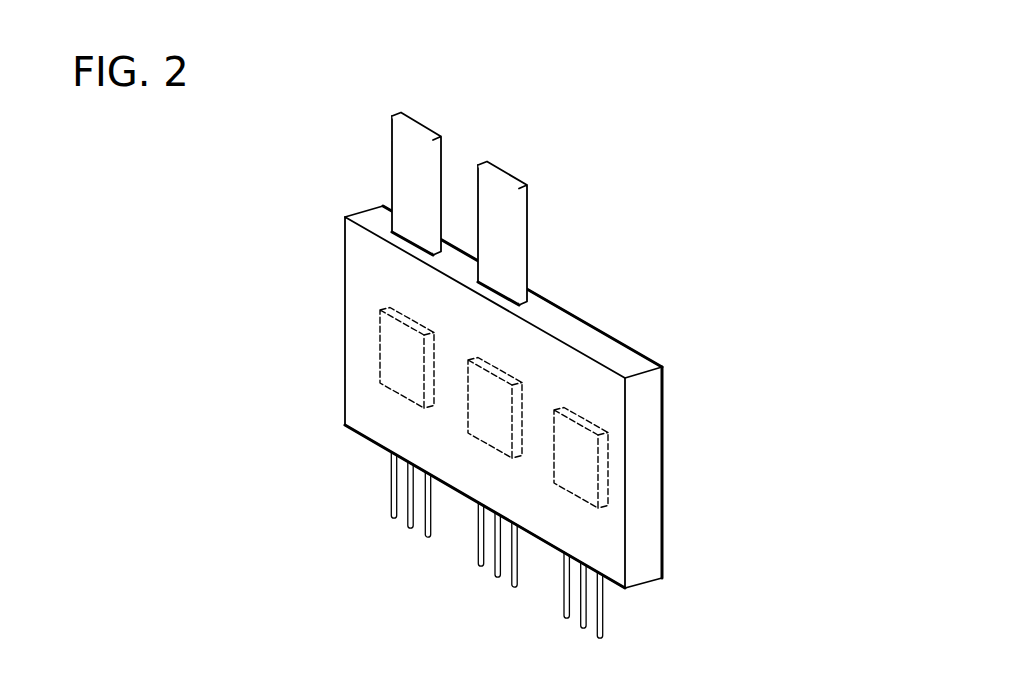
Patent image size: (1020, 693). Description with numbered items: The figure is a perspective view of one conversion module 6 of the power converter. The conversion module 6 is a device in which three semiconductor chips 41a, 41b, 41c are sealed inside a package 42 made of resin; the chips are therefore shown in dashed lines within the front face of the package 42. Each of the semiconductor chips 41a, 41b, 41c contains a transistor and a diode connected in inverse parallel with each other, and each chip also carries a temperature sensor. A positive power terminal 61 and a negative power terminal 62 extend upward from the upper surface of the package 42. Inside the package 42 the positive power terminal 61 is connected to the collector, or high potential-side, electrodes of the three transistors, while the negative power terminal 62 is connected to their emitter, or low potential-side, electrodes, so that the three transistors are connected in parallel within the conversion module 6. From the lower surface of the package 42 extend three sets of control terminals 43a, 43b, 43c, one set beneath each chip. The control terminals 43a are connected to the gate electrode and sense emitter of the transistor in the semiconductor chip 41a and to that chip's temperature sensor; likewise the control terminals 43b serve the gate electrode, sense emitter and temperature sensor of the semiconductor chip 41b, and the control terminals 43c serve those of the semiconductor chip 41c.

The conversion module 6 is at (336, 150).
The package 42 is at (643, 428).
The semiconductor chip 41a is at (390, 346).
The semiconductor chip 41b is at (493, 397).
The semiconductor chip 41c is at (577, 463).
The positive power terminal 61 is at (418, 125).
The negative power terminal 62 is at (503, 175).
The control terminals 43a is at (439, 511).
The control terminals 43b is at (524, 562).
The control terminals 43c is at (612, 613).